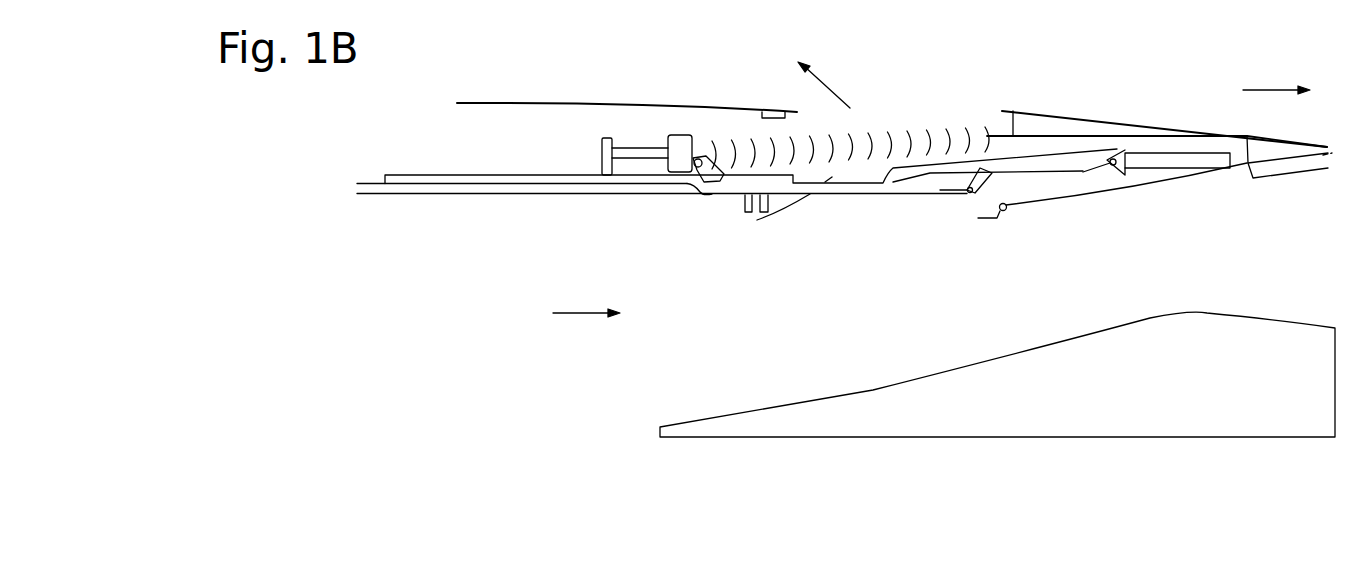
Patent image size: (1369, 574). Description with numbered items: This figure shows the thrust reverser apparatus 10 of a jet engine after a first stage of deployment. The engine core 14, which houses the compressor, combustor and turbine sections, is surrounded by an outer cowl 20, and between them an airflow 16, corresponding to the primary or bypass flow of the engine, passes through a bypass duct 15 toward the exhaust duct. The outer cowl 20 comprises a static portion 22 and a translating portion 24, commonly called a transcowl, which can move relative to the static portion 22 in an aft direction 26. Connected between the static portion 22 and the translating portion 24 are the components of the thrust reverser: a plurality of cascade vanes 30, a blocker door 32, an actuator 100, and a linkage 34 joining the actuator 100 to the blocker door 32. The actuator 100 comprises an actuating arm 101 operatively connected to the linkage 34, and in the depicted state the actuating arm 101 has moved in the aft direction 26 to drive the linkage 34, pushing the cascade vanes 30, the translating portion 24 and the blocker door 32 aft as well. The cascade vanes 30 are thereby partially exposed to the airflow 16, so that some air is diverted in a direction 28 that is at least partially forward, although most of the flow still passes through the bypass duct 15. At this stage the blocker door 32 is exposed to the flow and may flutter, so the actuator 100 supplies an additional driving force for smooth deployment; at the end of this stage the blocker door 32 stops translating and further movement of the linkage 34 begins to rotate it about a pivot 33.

The thrust reverser apparatus 10 is at (465, 84).
The engine core 14 is at (1220, 335).
The bypass duct 15 is at (1058, 282).
The airflow 16 is at (572, 313).
The outer cowl 20 is at (540, 103).
The static portion 22 is at (677, 104).
The translating portion 24 is at (1160, 122).
The aft direction 26 is at (1271, 90).
The direction 28 is at (833, 93).
The cascade vanes 30 is at (896, 137).
The blocker door 32 is at (1065, 162).
The pivot 33 is at (1113, 167).
The linkage 34 is at (857, 190).
The actuator 100 is at (600, 172).
The actuating arm 101 is at (605, 137).